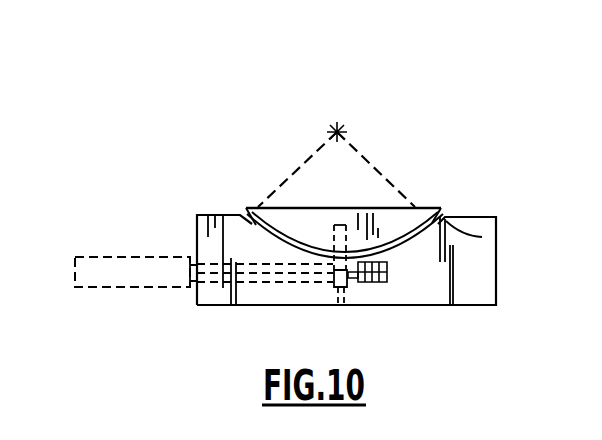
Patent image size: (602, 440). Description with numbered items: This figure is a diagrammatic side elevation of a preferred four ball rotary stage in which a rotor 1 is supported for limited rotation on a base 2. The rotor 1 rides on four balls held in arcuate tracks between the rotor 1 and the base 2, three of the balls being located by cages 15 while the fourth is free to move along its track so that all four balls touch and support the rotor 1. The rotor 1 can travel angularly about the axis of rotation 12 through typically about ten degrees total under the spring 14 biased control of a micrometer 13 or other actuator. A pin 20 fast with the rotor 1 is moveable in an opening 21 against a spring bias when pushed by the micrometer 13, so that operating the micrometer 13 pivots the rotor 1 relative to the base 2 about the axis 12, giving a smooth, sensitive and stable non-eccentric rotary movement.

The rotor 1 is at (298, 224).
The base 2 is at (498, 267).
The axis of rotation 12 is at (346, 128).
The micrometer 13 is at (75, 267).
The spring 14 is at (387, 278).
The cages 15 is at (470, 237).
The pin 20 is at (342, 305).
The opening 21 is at (330, 287).